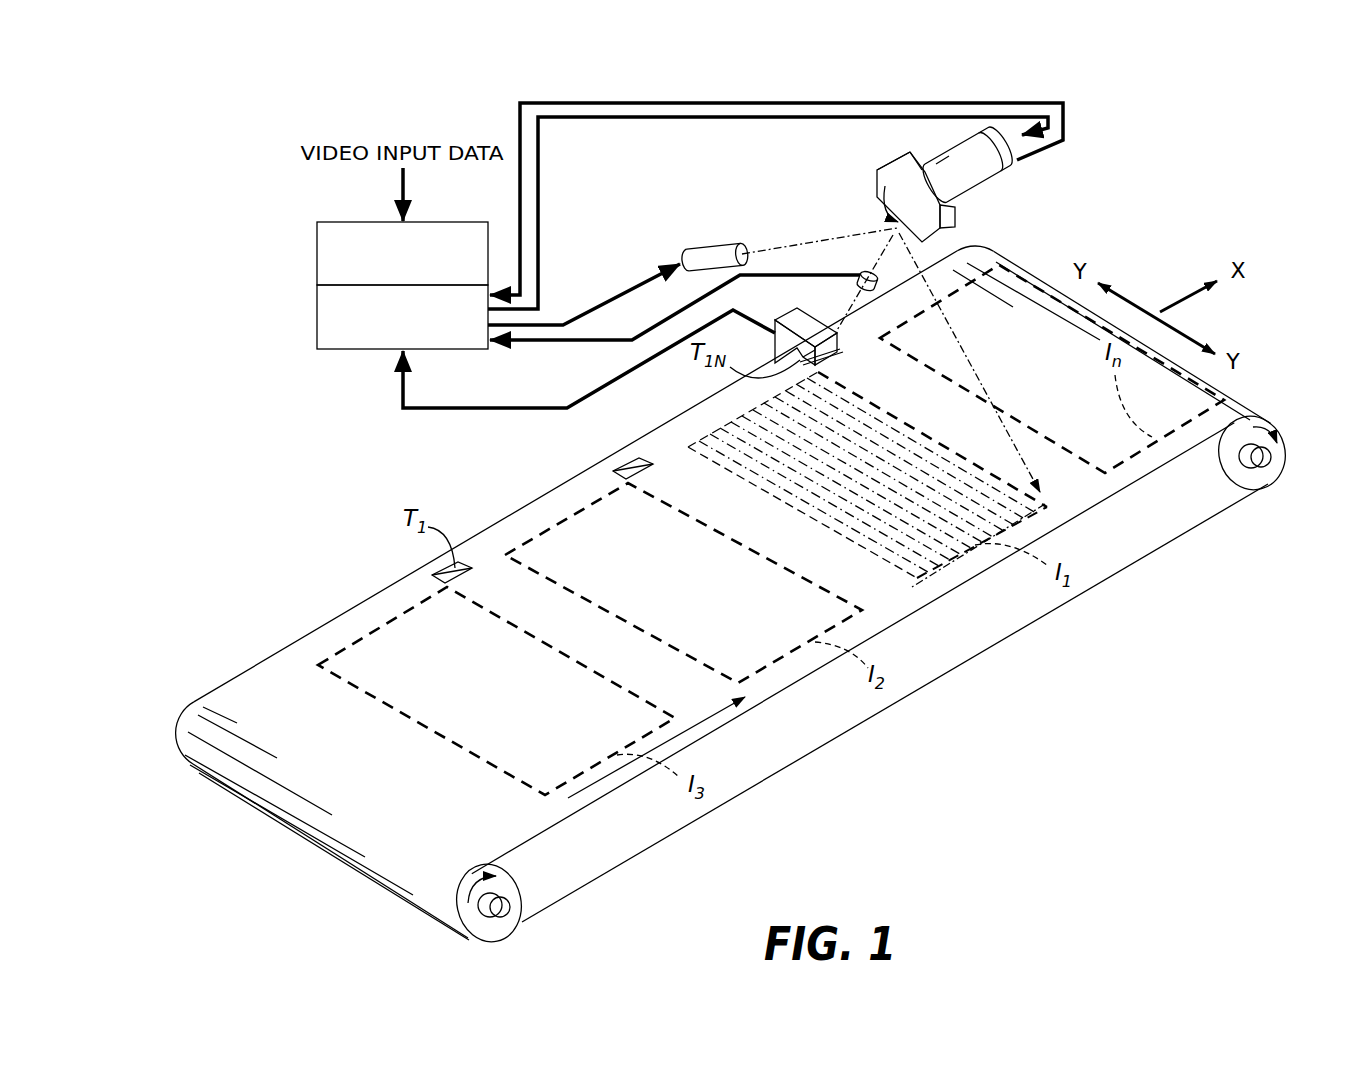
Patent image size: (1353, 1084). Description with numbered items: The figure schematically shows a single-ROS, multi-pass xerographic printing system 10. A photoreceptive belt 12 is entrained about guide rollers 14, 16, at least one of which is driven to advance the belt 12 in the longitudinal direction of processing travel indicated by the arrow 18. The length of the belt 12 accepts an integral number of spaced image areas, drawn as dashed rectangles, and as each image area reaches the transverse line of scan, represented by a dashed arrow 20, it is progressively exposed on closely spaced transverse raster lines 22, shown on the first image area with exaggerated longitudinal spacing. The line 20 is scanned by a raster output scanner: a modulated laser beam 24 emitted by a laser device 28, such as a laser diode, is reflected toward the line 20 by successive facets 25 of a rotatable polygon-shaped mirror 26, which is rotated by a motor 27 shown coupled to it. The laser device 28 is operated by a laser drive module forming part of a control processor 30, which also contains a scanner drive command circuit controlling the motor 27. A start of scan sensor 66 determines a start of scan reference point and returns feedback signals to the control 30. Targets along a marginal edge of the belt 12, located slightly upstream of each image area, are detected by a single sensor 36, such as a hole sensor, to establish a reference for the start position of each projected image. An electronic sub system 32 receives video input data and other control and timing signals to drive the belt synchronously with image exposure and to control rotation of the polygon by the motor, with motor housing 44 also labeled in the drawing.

The multi-pass xerographic printing system 10 is at (312, 478).
The photoreceptive belt 12 is at (642, 848).
The guide roller 14 is at (520, 892).
The guide roller 16 is at (1245, 482).
The arrow 18 is at (697, 720).
The transverse line of scan 20 is at (1047, 473).
The transverse raster lines 22 is at (980, 545).
The modulated laser beam 24 is at (812, 242).
The facets 25 is at (905, 158).
The polygon-shaped mirror 26 is at (970, 211).
The motor 27 is at (962, 143).
The laser device 28 is at (718, 250).
The control processor 30 is at (352, 350).
The electronic sub system (ESS) 32 is at (342, 222).
The sensor 36 is at (813, 323).
The motor 44 is at (1010, 170).
The start of scan (SOS) sensor 66 is at (866, 294).